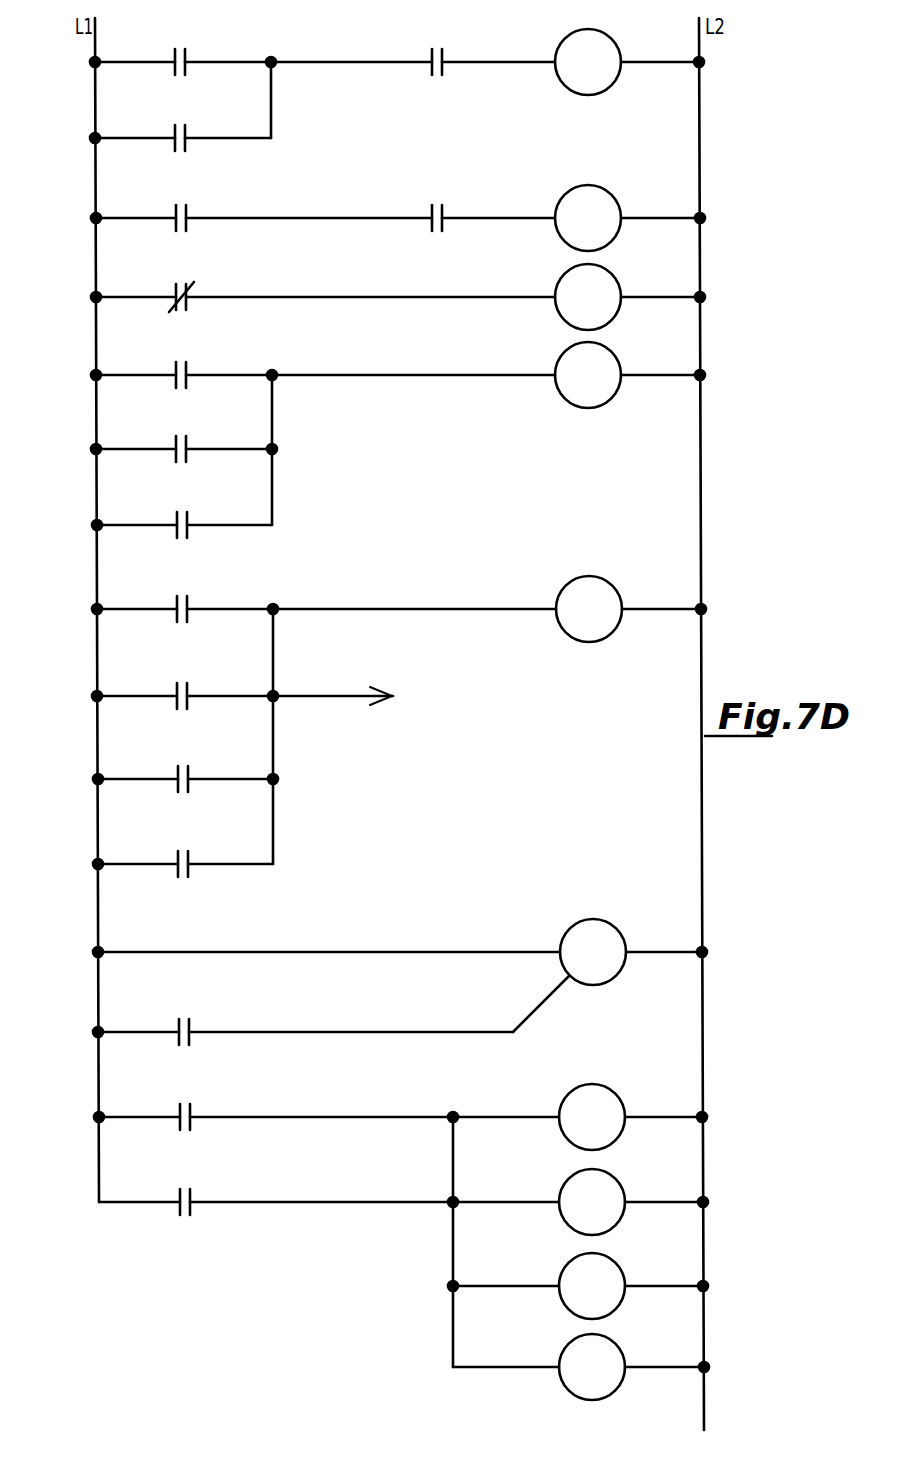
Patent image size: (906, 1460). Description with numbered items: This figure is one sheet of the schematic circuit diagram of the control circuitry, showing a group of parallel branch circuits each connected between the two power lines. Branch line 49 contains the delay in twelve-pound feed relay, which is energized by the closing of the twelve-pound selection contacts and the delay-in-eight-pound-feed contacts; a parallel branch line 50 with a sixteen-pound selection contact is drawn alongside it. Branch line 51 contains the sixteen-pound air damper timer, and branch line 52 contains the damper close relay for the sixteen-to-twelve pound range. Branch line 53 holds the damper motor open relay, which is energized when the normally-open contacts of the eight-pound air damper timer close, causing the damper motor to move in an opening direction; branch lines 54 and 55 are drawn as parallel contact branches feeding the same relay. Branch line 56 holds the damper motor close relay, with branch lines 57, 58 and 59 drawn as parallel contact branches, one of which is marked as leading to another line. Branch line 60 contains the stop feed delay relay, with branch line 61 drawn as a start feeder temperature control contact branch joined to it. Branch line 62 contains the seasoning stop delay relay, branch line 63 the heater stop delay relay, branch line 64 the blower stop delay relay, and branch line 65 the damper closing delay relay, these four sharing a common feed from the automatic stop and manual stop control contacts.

The branch line 49 is at (375, 60).
The ladder line 50 (CR16 contact parallel branch) 50 is at (159, 109).
The branch line 51 is at (376, 216).
The branch line 52 is at (376, 295).
The branch line 53 is at (376, 373).
The ladder line 54 (ADTR12 contact branch) 54 is at (162, 421).
The ladder line 55 (ADTR16 contact branch) 55 is at (160, 496).
The branch line 56 is at (377, 607).
The ladder line 57 (DCTR8 contact, to line 7) 57 is at (270, 661).
The ladder line 58 (DCTR12 contact branch) 58 is at (163, 746).
The ladder line 59 (DCTR16 contact branch) 59 is at (160, 830).
The branch line 60 is at (377, 952).
The ladder line 61 (TC2 contact) 61 is at (309, 1013).
The branch line 62 is at (378, 1115).
The branch line 63 is at (378, 1176).
The branch line 64 is at (378, 1260).
The branch line 65 is at (379, 1343).